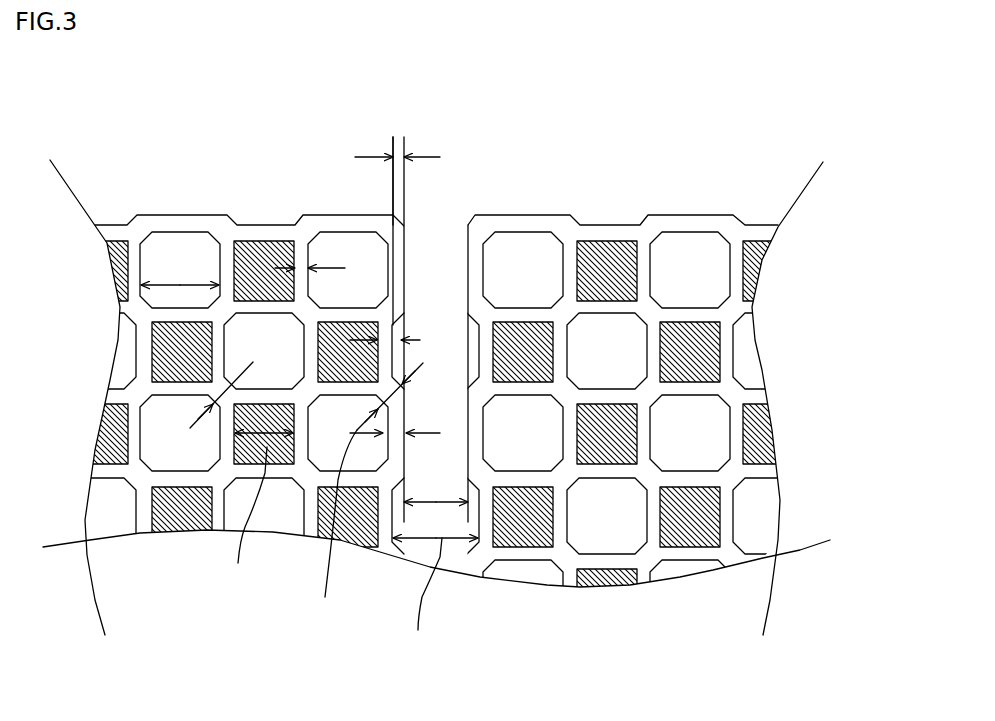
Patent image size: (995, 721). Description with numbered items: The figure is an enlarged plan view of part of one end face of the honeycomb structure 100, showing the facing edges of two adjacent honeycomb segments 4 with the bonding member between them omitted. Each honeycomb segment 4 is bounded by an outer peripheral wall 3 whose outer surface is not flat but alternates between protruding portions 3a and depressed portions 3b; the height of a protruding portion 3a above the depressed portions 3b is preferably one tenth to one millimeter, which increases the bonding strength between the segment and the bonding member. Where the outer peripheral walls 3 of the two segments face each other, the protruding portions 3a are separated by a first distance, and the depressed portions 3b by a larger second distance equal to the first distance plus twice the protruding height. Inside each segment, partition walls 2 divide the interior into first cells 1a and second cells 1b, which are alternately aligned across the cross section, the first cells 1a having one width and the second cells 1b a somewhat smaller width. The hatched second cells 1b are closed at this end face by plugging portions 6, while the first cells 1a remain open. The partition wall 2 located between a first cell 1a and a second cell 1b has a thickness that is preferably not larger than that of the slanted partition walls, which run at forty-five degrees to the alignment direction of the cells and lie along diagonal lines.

The honeycomb structure 100 is at (845, 64).
The honeycomb segment 4 is at (157, 211).
The outer peripheral wall 3 is at (710, 215).
The protruding portion 3a is at (338, 215).
The depressed portion 3b is at (258, 225).
The partition wall 2 is at (562, 258).
The first cell 1a is at (688, 260).
The second cell 1b is at (603, 257).
The plugging portion 6 is at (692, 520).